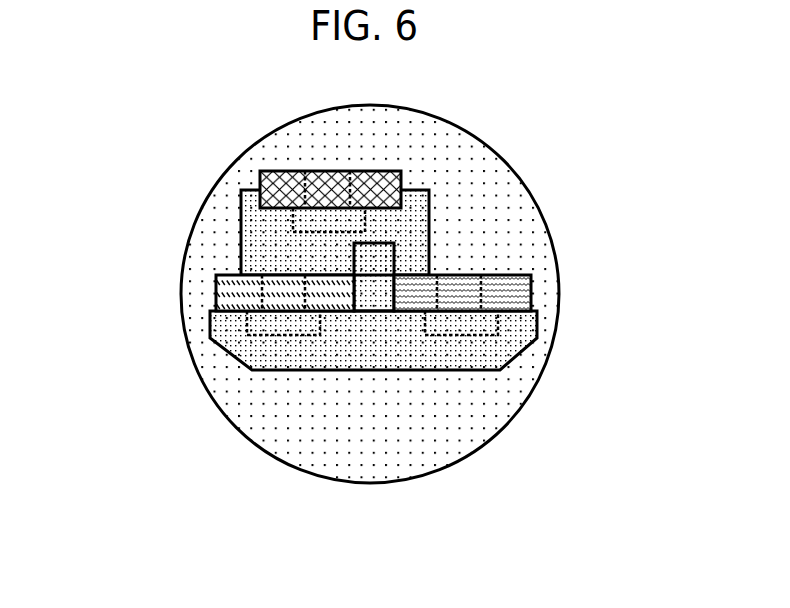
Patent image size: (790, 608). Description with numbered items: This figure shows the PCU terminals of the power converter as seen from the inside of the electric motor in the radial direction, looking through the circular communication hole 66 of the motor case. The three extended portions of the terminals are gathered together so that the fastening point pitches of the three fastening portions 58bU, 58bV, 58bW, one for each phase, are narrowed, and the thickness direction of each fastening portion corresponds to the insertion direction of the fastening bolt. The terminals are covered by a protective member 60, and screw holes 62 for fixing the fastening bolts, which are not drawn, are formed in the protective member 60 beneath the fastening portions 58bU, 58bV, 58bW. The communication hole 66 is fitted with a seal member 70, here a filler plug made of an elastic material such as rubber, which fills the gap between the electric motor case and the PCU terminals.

The fastening portion 58bU is at (227, 295).
The fastening portion 58bV is at (382, 187).
The fastening portion 58bW is at (515, 297).
The protective member 60 is at (263, 247).
The screw hole 62 is at (368, 222).
The communication hole 66 is at (488, 430).
The seal member 70 is at (363, 462).